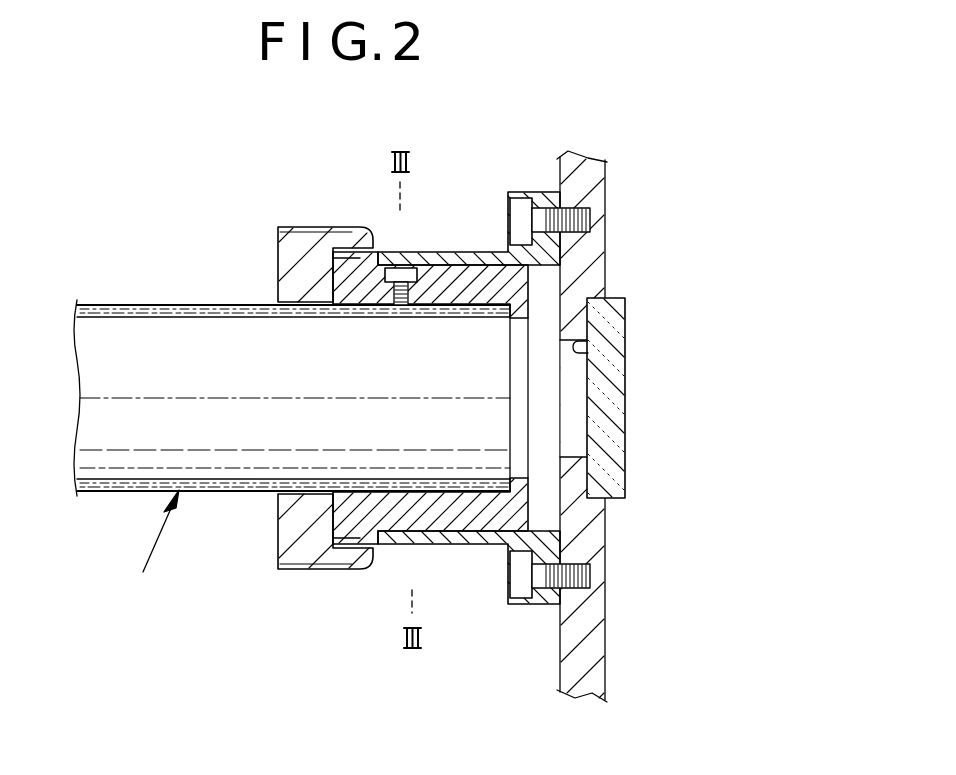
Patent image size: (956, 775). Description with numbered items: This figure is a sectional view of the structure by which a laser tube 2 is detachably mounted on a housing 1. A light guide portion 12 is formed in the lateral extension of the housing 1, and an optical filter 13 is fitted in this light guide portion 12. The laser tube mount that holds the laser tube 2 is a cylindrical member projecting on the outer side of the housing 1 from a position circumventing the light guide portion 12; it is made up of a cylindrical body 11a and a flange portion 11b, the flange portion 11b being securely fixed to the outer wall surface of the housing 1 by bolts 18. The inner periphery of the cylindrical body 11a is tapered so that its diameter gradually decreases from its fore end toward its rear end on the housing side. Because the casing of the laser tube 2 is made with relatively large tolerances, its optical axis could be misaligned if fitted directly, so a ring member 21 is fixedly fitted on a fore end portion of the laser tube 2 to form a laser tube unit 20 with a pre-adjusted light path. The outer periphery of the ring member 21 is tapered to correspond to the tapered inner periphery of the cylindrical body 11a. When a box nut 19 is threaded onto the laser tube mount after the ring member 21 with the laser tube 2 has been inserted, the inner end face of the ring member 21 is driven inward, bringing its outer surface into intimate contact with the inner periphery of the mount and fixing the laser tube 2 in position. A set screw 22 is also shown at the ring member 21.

The housing 1 is at (590, 668).
The laser tube 2 is at (167, 305).
The cylindrical body 11a is at (458, 252).
The flange portion 11b is at (531, 612).
The light guide portion 12 is at (588, 353).
The optical filter 13 is at (606, 430).
The bolts 18 is at (586, 220).
The box nut 19 is at (299, 568).
The laser tube unit 20 is at (148, 550).
The ring member 21 is at (444, 522).
The set screw 22 is at (400, 273).